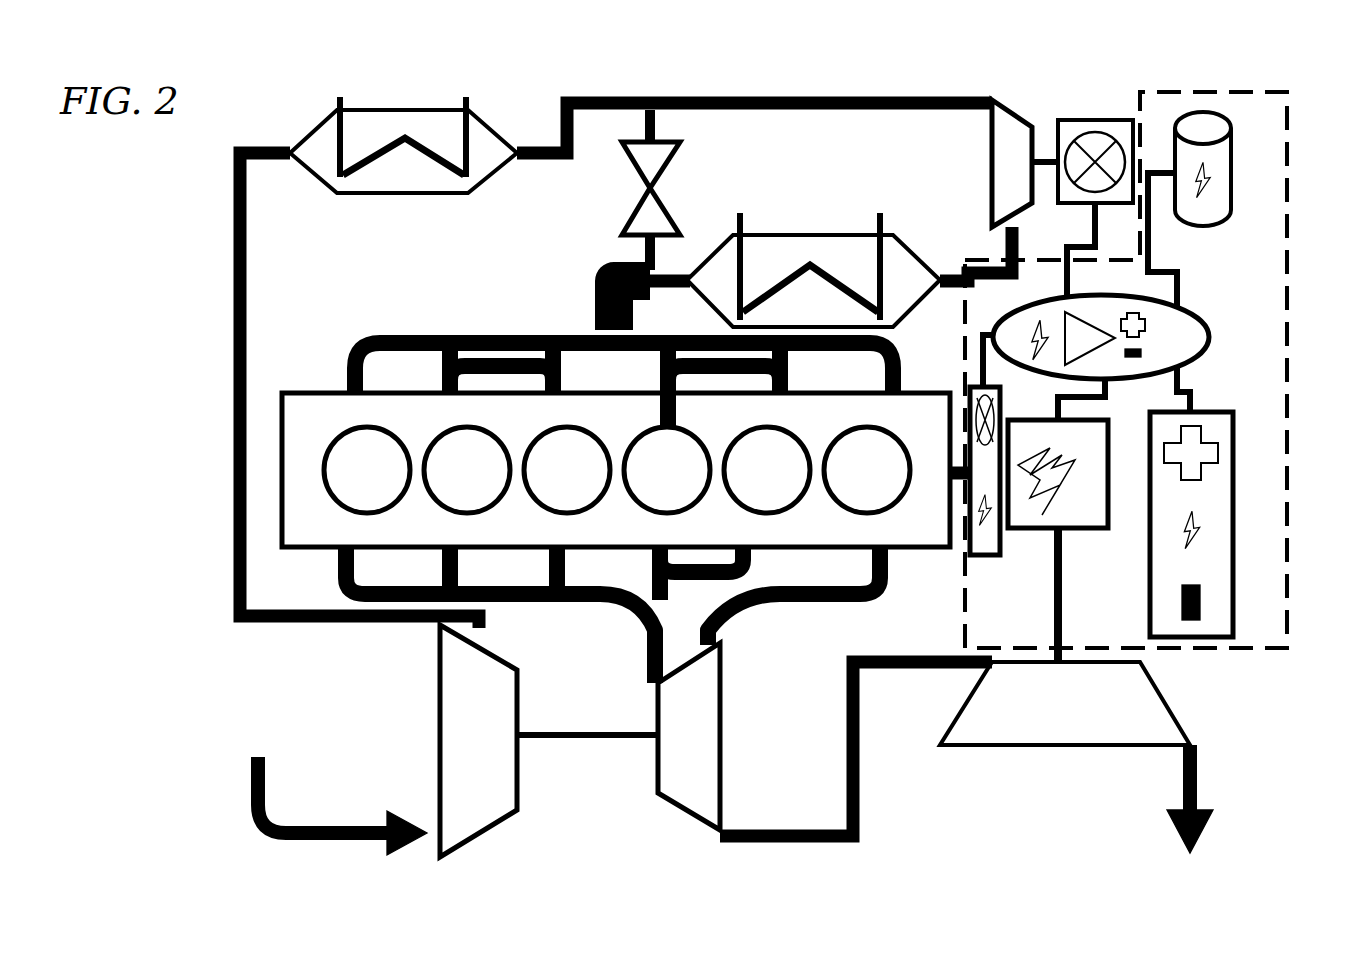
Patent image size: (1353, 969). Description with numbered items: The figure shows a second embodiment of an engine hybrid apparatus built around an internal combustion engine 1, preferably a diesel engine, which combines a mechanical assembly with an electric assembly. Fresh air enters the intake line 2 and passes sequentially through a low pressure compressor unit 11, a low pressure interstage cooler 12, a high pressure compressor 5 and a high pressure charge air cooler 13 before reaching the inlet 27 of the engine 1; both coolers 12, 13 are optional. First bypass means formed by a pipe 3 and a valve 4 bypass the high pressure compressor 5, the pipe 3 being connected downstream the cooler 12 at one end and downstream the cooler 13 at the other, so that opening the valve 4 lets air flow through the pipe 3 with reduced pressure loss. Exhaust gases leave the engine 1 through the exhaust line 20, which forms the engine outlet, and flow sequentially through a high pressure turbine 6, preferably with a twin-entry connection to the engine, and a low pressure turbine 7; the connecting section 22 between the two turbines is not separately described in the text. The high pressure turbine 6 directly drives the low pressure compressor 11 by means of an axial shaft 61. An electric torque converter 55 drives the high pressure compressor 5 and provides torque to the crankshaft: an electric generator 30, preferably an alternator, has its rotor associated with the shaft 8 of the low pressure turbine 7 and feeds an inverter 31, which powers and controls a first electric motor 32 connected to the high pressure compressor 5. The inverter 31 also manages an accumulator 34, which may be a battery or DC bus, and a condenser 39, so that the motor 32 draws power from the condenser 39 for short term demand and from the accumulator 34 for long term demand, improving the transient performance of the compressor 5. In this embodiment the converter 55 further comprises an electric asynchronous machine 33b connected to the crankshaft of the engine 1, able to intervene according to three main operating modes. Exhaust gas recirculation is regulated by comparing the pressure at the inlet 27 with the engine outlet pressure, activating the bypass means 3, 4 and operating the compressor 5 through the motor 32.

The internal combustion engine 1 is at (307, 463).
The intake line 2 is at (230, 585).
The pipe 3 is at (640, 120).
The valve 4 is at (668, 208).
The high pressure compressor 5 is at (1006, 168).
The high pressure turbine 6 is at (668, 777).
The low pressure turbine 7 is at (1112, 688).
The LPT shaft 8 is at (1055, 665).
The low pressure compressor unit 11 is at (470, 748).
The low pressure interstage cooler 12 is at (397, 133).
The high pressure charge air cooler 13 is at (775, 262).
The exhaust line 20 is at (697, 643).
The exhaust line to power turbine 22 is at (792, 843).
The inlet of the combustion engine 27 is at (600, 323).
The electric generator 30 is at (1050, 528).
The inverter 31 is at (1185, 343).
The first electric motor 32 is at (1105, 180).
The electric asynchronous machine 33b is at (987, 545).
The accumulator 34 is at (1173, 617).
The condenser 39 is at (1218, 165).
The electric torque converter 55 is at (1288, 284).
The axial shaft 61 is at (533, 745).